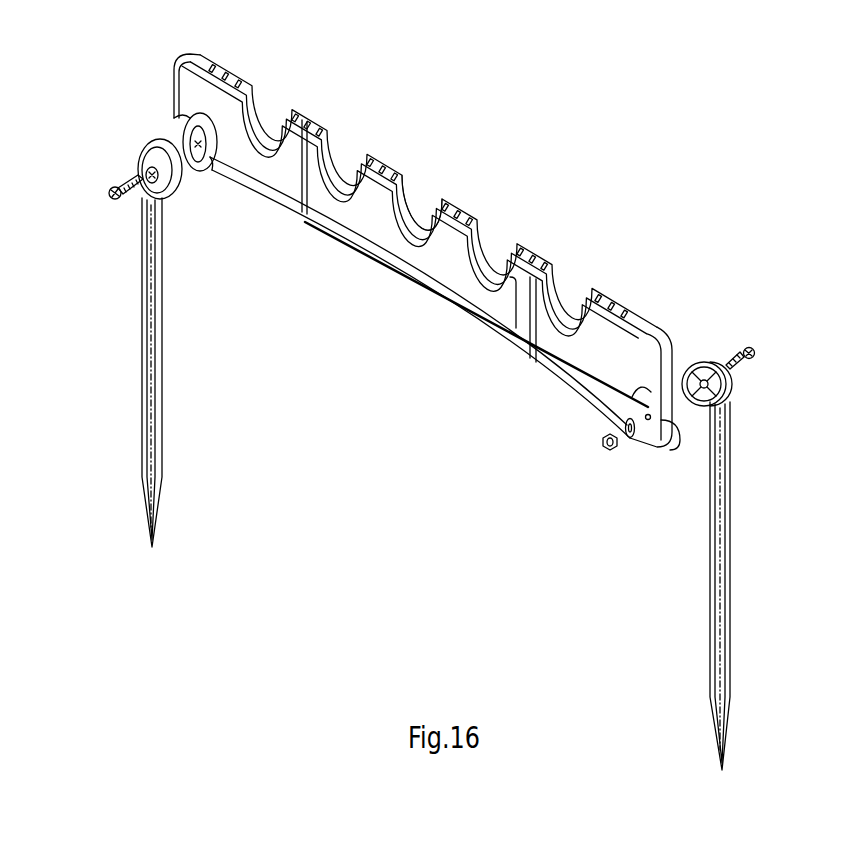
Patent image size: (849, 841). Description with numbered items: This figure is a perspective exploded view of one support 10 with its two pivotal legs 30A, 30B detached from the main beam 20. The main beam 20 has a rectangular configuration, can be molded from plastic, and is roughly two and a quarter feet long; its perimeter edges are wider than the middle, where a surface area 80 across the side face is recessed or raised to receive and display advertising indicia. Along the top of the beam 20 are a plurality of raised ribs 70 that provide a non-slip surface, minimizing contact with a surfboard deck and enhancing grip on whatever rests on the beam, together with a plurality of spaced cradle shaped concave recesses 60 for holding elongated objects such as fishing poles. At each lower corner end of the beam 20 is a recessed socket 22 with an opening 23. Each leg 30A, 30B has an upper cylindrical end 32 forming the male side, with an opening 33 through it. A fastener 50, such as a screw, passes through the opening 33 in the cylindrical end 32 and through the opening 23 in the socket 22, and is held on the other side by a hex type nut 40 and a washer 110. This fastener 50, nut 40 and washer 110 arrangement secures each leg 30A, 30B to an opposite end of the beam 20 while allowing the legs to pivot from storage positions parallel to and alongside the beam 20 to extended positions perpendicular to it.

The support 10 is at (598, 158).
The main beam 20 is at (235, 117).
The recessed socket 22 is at (205, 152).
The opening 23 is at (657, 383).
The first pivotal leg 30A is at (143, 323).
The second pivotal leg 30B is at (723, 563).
The upper cylindrical end 32 is at (176, 196).
The opening 33 is at (152, 167).
The hex nut 40 is at (607, 450).
The fastener 50 is at (128, 182).
The cradle shaped recess 60 is at (420, 205).
The raised ribs 70 is at (300, 138).
The surface area 80 is at (362, 222).
The washer 110 is at (630, 437).